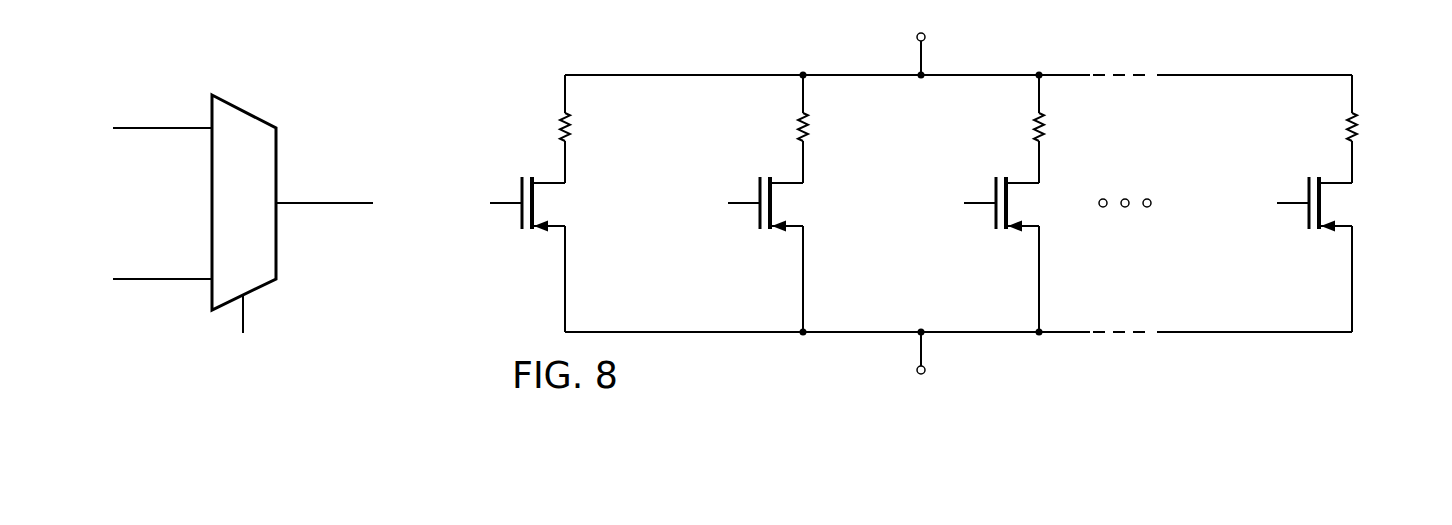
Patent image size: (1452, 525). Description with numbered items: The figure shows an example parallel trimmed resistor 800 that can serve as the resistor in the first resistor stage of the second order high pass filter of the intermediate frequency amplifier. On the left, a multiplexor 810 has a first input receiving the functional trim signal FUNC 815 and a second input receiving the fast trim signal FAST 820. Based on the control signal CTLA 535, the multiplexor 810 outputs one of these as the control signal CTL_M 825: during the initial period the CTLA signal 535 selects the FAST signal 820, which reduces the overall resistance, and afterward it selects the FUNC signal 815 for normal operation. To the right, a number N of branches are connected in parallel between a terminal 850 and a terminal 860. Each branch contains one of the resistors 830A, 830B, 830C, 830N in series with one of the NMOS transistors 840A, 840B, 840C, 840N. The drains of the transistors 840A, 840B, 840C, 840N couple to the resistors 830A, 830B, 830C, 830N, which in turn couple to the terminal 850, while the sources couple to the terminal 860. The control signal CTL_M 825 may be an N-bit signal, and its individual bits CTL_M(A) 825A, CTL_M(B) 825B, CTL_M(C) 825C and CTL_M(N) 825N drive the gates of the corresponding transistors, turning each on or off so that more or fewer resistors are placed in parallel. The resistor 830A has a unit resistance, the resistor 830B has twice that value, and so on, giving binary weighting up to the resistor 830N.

The parallel trimmed resistor 800 is at (466, 50).
The multiplexor 810 is at (243, 111).
The FUNC signal 815 is at (152, 130).
The FAST signal 820 is at (162, 281).
The control signal CTL_M 825 is at (322, 205).
The control signal CTLA 535 is at (243, 315).
The terminal 850 is at (925, 35).
The terminal 860 is at (925, 373).
The resistor 830A is at (572, 128).
The resistor 830B is at (810, 128).
The resistor 830C is at (1046, 128).
The resistor 830N is at (1359, 128).
The transistor 840A is at (521, 183).
The transistor 840B is at (759, 183).
The transistor 840C is at (995, 183).
The transistor 840N is at (1308, 183).
The control signal CTL_M(A) 825A is at (500, 206).
The control signal CTL_M(B) 825B is at (738, 206).
The control signal CTL_M(C) 825C is at (974, 206).
The control signal CTL_M(N) 825N is at (1287, 206).